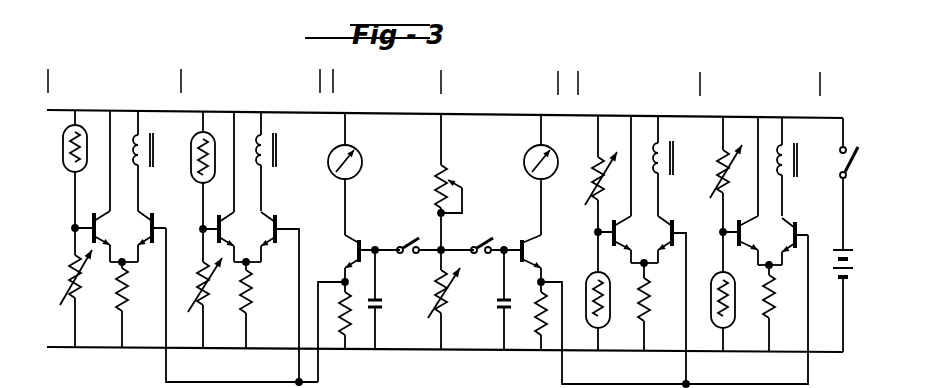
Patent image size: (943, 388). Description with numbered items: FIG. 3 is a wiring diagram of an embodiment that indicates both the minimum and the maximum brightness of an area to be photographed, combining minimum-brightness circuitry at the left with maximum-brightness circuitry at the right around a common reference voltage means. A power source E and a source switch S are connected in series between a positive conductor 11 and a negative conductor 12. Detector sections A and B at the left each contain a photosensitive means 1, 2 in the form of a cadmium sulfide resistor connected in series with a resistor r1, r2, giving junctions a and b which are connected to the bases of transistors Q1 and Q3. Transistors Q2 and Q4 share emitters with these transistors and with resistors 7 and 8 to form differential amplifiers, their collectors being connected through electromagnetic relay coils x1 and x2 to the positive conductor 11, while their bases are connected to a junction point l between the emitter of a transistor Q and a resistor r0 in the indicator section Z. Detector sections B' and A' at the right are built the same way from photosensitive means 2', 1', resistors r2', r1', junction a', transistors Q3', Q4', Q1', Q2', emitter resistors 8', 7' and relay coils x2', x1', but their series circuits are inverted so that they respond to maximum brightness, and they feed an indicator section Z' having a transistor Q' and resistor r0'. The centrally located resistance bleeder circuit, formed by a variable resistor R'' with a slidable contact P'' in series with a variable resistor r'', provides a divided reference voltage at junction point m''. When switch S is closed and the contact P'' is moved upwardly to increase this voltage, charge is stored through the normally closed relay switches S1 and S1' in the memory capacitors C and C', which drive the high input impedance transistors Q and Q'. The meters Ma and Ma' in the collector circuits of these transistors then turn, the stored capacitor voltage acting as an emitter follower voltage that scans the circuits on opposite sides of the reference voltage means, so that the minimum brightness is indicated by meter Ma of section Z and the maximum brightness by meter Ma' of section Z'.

The photosensitive means 1 is at (60, 151).
The photosensitive means 2 is at (190, 153).
The resistor 7 is at (135, 305).
The resistor 8 is at (259, 305).
The positive conductor 11 is at (318, 113).
The negative conductor 12 is at (400, 351).
The photosensitive means 1' is at (736, 291).
The photosensitive means 2' is at (608, 291).
The resistor 7' is at (783, 308).
The resistor 8' is at (658, 307).
The junction a is at (54, 236).
The junction b is at (200, 234).
The junction a' is at (710, 242).
The junction point l is at (344, 281).
The resistor r1 is at (62, 287).
The resistor r2 is at (201, 288).
The resistor r1' is at (718, 174).
The resistor r2' is at (587, 173).
The resistor r0 is at (336, 315).
The resistor r0' is at (529, 316).
The variable resistor r'' is at (449, 300).
The transistor Q1 is at (96, 203).
The transistor Q2 is at (159, 228).
The transistor Q3 is at (219, 187).
The transistor Q4 is at (283, 230).
The transistor Q is at (360, 247).
The transistor Q' is at (533, 258).
The transistor Q1' is at (741, 200).
The transistor Q2' is at (808, 234).
The transistor Q3' is at (615, 199).
The transistor Q4' is at (672, 251).
The electromagnetic coil x1 is at (154, 161).
The electromagnetic coil x2 is at (283, 161).
The electromagnetic coil x1' is at (805, 166).
The electromagnetic coil x2' is at (673, 166).
The meter Ma is at (367, 146).
The meter Ma' is at (559, 175).
The normally closed switch S1 is at (405, 238).
The normally closed switch S1' is at (489, 238).
The source switch S is at (854, 151).
The power source E is at (850, 265).
The memory capacitor C is at (384, 299).
The memory capacitor C' is at (496, 300).
The slidable contact P'' is at (461, 182).
The variable resistor R'' is at (464, 200).
The junction point m'' is at (429, 234).
The detector section A is at (114, 83).
The detector section B is at (250, 83).
The indicator section Z is at (387, 84).
The indicator section Z' is at (499, 85).
The detector section B' is at (639, 85).
The detector section A' is at (760, 85).